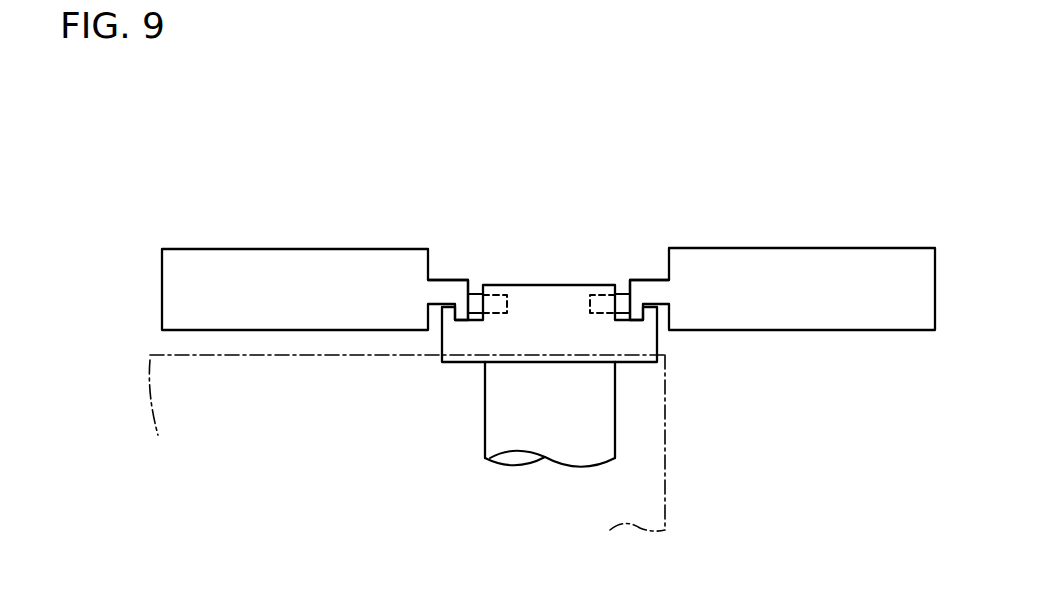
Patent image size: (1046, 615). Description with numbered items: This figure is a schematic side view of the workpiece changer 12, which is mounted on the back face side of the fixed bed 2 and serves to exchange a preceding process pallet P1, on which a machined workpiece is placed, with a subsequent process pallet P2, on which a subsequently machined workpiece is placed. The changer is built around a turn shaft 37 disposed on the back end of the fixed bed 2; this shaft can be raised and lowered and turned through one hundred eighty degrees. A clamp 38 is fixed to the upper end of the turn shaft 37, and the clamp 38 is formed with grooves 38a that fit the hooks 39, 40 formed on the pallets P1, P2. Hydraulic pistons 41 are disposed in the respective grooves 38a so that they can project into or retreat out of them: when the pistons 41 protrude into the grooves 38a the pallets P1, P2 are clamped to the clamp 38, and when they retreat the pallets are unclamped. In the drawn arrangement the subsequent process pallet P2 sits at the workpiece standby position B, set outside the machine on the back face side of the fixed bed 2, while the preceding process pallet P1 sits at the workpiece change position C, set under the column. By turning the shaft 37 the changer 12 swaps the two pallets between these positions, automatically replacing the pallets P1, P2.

The workpiece changer 12 is at (401, 159).
The turn shaft 37 is at (617, 405).
The clamp 38 is at (548, 283).
The groove 38a is at (612, 283).
The hook 39 is at (450, 280).
The hook 40 is at (648, 280).
The hydraulic piston 41 is at (474, 293).
The preceding process pallet P1 is at (269, 249).
The subsequent process pallet P2 is at (826, 248).
The workpiece change position C is at (248, 345).
The workpiece standby position B is at (805, 350).
The fixed bed 2 is at (665, 505).